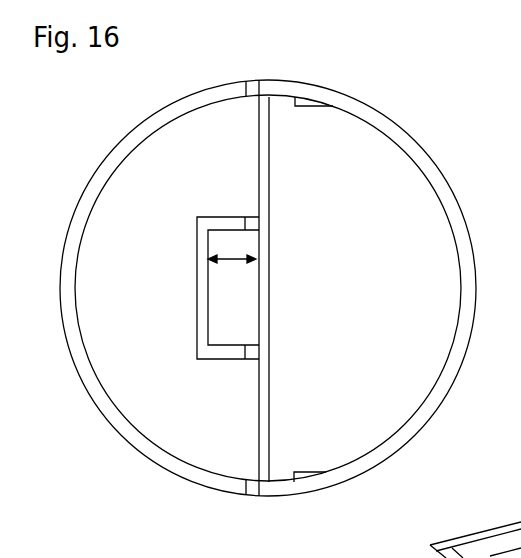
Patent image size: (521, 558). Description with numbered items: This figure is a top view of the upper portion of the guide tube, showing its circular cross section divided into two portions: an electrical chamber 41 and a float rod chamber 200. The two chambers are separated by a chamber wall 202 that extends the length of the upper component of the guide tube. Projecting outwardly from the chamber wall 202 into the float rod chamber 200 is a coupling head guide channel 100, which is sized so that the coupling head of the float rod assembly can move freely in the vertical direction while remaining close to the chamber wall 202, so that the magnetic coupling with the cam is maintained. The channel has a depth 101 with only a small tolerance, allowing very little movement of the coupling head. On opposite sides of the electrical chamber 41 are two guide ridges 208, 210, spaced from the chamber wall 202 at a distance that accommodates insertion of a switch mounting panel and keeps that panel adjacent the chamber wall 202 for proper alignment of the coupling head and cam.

The float rod chamber 200 is at (160, 194).
The chamber wall 202 is at (263, 127).
The guide ridge 208 is at (309, 103).
The guide ridge 210 is at (305, 475).
The coupling head guide channel 100 is at (230, 313).
The depth 101 is at (236, 262).
The electrical chamber 41 is at (355, 195).